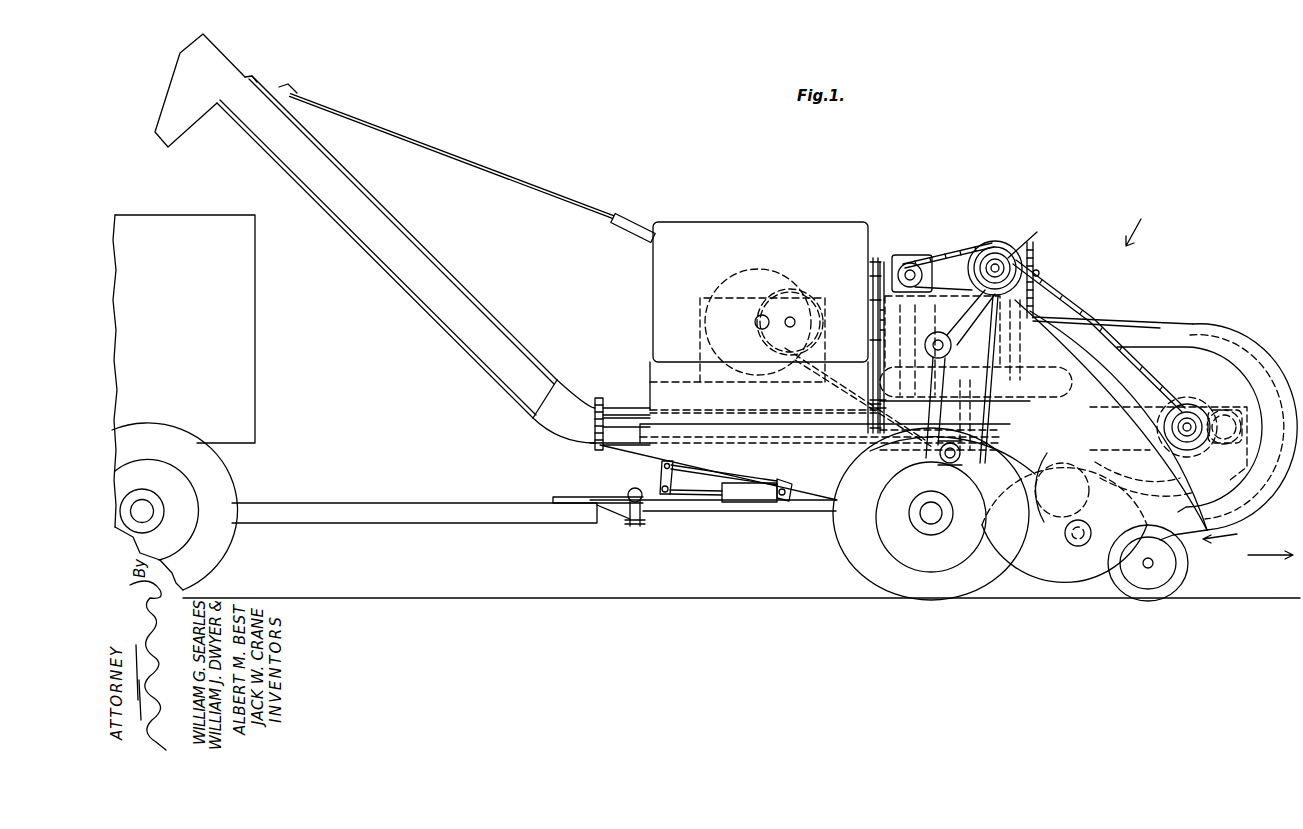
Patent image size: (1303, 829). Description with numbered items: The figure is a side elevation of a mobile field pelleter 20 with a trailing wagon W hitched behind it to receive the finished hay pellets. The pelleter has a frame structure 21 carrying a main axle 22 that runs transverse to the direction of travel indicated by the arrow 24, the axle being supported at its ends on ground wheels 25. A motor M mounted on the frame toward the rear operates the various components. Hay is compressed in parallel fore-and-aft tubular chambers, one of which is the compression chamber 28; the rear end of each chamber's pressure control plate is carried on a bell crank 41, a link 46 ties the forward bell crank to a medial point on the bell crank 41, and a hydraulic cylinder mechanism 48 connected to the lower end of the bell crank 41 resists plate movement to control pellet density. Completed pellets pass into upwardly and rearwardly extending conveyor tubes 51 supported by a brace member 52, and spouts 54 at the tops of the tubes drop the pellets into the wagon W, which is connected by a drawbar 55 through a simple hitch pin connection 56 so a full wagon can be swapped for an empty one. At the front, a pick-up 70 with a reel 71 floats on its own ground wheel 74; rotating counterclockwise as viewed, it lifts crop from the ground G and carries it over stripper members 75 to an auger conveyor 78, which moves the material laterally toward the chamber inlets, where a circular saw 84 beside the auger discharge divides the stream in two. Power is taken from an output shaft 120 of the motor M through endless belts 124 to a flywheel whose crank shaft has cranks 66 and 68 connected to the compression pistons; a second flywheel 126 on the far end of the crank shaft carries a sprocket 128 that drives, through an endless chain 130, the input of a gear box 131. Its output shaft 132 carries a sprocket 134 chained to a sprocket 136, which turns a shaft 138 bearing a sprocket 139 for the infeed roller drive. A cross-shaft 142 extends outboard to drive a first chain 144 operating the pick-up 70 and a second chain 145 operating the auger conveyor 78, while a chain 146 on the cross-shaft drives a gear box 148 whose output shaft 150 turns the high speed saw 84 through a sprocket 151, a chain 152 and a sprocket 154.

The field pelleter 20 is at (1136, 222).
The frame structure 21 is at (812, 478).
The main axle 22 is at (929, 525).
The arrow indicating direction of travel 24 is at (1268, 558).
The ground wheels 25 is at (845, 567).
The compression chamber 28 is at (623, 408).
The bell crank 41 is at (660, 476).
The link 46 is at (728, 468).
The hydraulic cylinder mechanism 48 is at (747, 502).
The conveyor tubes 51 is at (455, 279).
The brace member 52 is at (476, 165).
The spouts 54 is at (170, 97).
The drawbar 55 is at (420, 502).
The hitch pin connection 56 is at (640, 527).
The crank 66 is at (1226, 410).
The crank 68 is at (1157, 408).
The pick-up 70 is at (1231, 533).
The reel 71 is at (1060, 512).
The ground wheel 74 is at (1189, 570).
The stripper members 75 is at (1178, 479).
The auger conveyor 78 is at (880, 312).
The circular saw 84 is at (940, 447).
The output shaft 120 is at (768, 318).
The endless belts 124 is at (1122, 323).
The flywheel 126 is at (1254, 348).
The sprocket 128 is at (1188, 405).
The endless chain 130 is at (1077, 313).
The gear box 131 is at (996, 241).
The output shaft 132 is at (1039, 274).
The sprocket 134 is at (1035, 257).
The sprocket 136 is at (1070, 388).
The shaft 138 is at (991, 411).
The sprocket 139 is at (1013, 350).
The cross-shaft 142 is at (1031, 235).
The first chain 144 is at (925, 385).
The second chain 145 is at (975, 280).
The chain 146 is at (960, 253).
The gear box 148 is at (912, 258).
The output shaft 150 is at (877, 258).
The sprocket 151 is at (872, 268).
The chain 152 is at (876, 338).
The sprocket 154 is at (878, 405).
The ground G is at (713, 597).
The motor M is at (782, 228).
The trailing wagon W is at (252, 339).